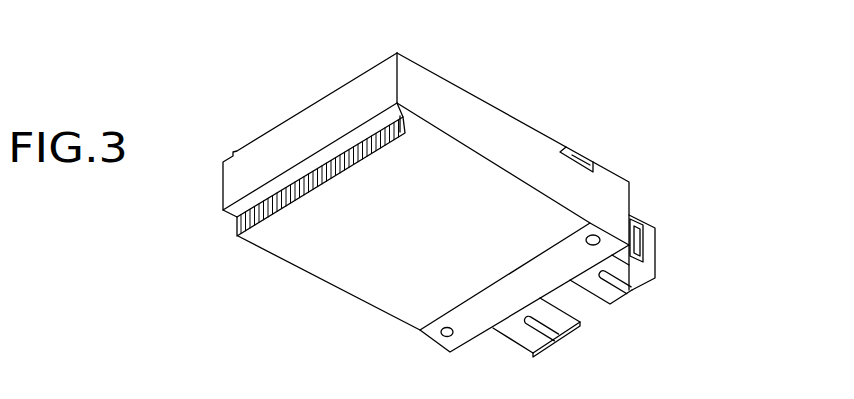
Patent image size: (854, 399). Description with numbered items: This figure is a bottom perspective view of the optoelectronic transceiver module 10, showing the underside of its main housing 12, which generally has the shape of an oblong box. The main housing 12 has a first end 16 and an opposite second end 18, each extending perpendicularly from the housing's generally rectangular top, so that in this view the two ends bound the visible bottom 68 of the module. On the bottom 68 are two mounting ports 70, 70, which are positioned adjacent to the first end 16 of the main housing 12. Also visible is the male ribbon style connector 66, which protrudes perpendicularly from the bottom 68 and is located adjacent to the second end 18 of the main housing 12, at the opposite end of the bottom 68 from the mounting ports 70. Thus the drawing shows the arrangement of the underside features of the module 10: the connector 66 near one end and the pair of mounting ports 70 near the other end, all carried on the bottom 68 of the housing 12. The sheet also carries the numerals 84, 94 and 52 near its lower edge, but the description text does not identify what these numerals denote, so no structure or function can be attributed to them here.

The optoelectronic transceiver module 10 is at (527, 118).
The main housing 12 is at (437, 100).
The second end 18 is at (350, 105).
The first end 16 is at (468, 343).
The male ribbon style connector 66 is at (243, 233).
The bottom 68 is at (430, 231).
The mounting ports 70 is at (594, 237).
The contact 84 is at (219, 396).
The contact 94 is at (245, 398).
The contact 52 is at (309, 388).